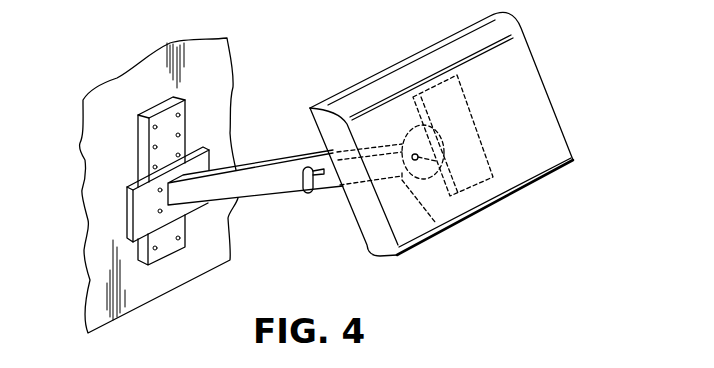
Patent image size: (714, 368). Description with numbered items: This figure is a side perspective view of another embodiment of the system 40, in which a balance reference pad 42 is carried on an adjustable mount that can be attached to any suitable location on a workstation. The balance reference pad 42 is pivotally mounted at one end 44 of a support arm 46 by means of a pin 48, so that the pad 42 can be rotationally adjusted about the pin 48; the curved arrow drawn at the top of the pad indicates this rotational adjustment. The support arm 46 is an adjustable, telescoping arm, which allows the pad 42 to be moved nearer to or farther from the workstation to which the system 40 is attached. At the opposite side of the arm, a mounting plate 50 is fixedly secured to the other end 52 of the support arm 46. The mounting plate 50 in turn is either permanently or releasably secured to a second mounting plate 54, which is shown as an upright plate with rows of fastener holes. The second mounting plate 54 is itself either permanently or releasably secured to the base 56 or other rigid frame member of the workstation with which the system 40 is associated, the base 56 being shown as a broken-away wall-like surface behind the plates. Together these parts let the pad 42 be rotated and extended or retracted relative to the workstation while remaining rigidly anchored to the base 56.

The system 40 is at (368, 48).
The balance reference pad 42 is at (510, 67).
The one end of support arm 44 is at (437, 237).
The support arm 46 is at (300, 176).
The pin 48 is at (436, 161).
The mounting plate 50 is at (143, 208).
The other end of support arm 52 is at (165, 199).
The second mounting plate 54 is at (172, 128).
The base 56 is at (218, 83).